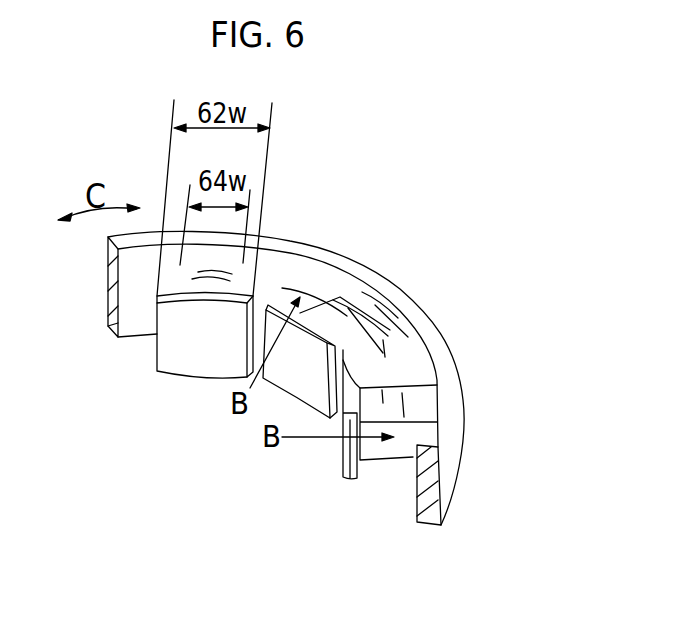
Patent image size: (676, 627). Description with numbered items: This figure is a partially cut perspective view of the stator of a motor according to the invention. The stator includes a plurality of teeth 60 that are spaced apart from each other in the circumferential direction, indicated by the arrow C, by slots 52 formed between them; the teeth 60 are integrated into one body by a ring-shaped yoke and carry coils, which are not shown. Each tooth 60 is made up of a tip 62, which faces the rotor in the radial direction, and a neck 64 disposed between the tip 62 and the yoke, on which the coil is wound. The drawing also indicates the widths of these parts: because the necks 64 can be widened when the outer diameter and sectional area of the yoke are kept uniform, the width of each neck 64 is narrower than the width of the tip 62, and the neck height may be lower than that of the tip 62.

The slot 52 is at (292, 278).
The tooth 60 is at (357, 557).
The tip 62 is at (348, 477).
The neck 64 is at (410, 453).